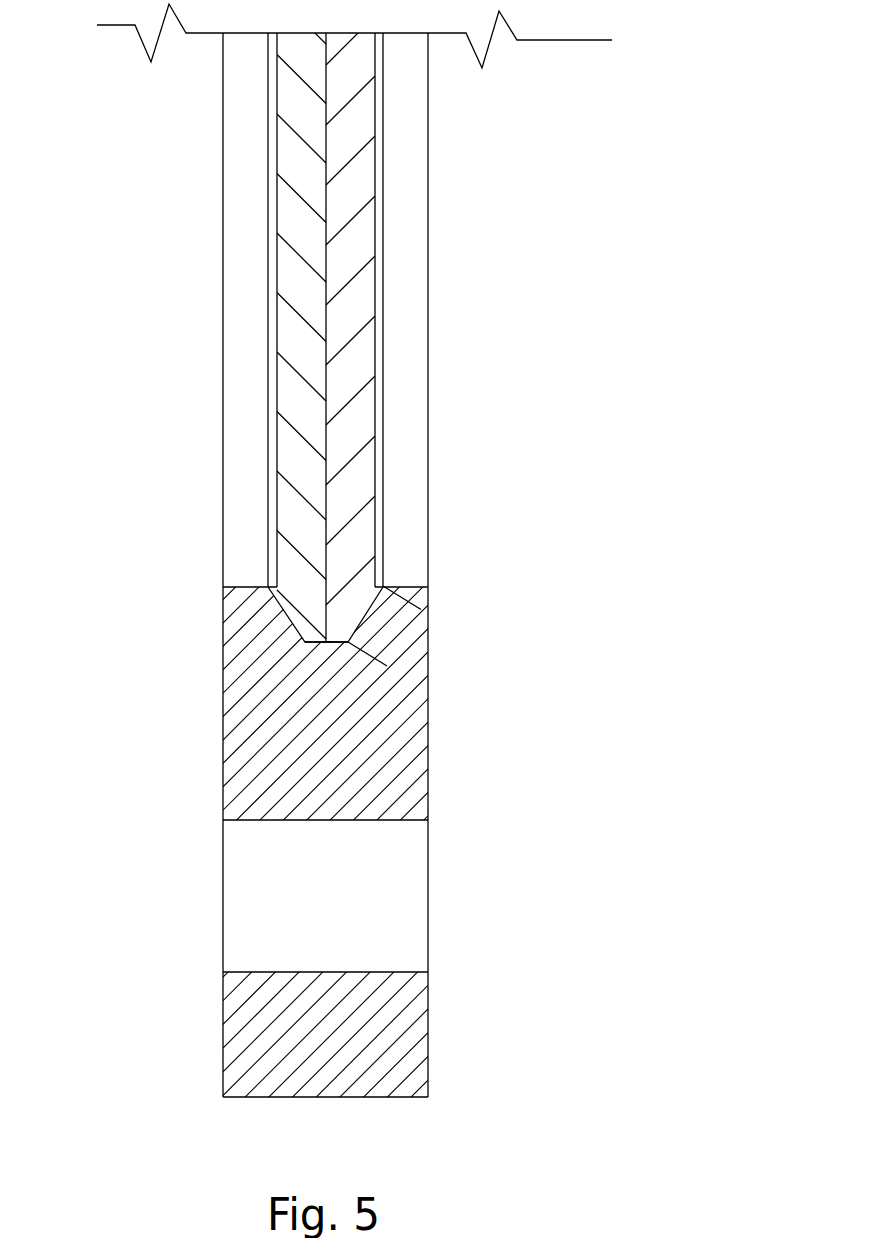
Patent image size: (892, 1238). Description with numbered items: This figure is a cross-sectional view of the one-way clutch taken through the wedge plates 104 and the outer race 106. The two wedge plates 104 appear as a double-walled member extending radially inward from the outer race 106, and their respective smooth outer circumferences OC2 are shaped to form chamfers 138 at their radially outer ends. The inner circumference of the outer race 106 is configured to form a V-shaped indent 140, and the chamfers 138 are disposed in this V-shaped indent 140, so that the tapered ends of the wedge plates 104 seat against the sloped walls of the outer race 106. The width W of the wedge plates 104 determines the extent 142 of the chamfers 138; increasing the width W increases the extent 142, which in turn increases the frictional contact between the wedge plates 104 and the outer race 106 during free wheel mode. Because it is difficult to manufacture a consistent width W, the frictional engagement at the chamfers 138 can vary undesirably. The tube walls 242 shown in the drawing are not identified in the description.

The wedge plate 104 is at (597, 142).
The tube wall 242 is at (267, 202).
The width of the wedge plates W is at (212, 383).
The chamfers 138 is at (281, 604).
The extent of the chamfers 142 is at (323, 713).
The outer race 106 is at (428, 640).
The V-shaped indent 140 is at (320, 651).
The smooth outer circumference OC2 is at (326, 646).